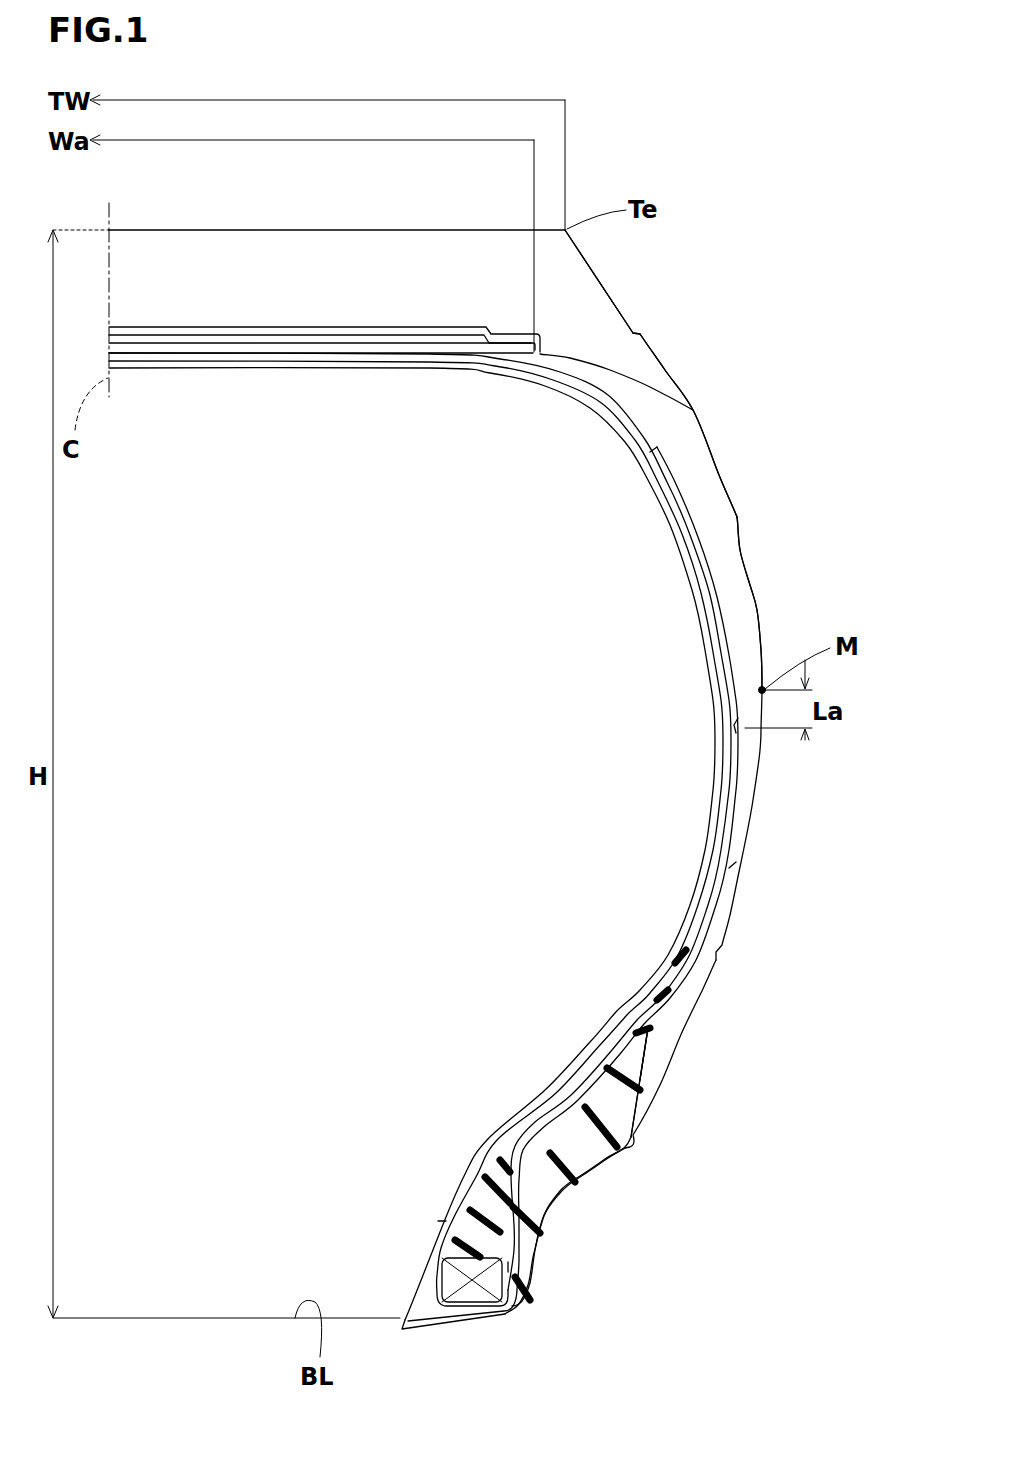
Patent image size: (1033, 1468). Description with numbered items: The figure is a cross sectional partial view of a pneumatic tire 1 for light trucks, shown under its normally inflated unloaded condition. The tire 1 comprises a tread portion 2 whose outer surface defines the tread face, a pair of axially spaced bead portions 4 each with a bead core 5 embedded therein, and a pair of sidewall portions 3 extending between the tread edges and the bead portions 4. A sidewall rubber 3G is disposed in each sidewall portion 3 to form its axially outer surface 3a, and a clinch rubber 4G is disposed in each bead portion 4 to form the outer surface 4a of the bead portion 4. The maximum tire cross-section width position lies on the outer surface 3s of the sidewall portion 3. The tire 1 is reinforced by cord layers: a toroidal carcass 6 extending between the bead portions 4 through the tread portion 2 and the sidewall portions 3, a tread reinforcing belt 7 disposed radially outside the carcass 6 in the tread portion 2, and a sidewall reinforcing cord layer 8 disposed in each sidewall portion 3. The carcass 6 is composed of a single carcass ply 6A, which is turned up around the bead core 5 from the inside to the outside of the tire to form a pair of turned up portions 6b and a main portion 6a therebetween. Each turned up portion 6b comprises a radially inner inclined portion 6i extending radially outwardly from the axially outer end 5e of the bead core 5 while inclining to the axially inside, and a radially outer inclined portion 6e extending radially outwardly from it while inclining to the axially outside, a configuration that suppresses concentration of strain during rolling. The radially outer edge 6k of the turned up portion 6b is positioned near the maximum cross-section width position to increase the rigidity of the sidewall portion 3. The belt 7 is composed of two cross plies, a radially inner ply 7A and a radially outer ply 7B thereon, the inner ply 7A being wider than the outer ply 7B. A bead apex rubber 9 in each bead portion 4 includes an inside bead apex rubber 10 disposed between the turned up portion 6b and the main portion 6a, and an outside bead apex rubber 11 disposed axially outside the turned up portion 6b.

The pneumatic tire 1 is at (710, 154).
The tread portion 2 is at (405, 214).
The sidewall portion 3 is at (800, 493).
The axially outer surface of the sidewall portion 3a is at (723, 468).
The outer surface of the sidewall portion 3s is at (758, 610).
The sidewall rubber 3G is at (718, 905).
The bead portion 4 is at (679, 1242).
The outer surface of the bead portion 4a is at (563, 1200).
The clinch rubber 4G is at (632, 1140).
The bead core 5 is at (455, 1277).
The axially outer end of the bead core 5e is at (512, 1262).
The carcass 6 is at (720, 803).
The carcass ply 6A is at (460, 952).
The main portion 6a is at (573, 1078).
The turned up portion 6b is at (640, 1022).
The radially outer inclined portion 6e is at (655, 1033).
The radially inner inclined portion 6i is at (510, 1243).
The radially outer edge of the turned up portion 6k is at (733, 725).
The tread reinforcing belt 7 is at (428, 350).
The radially inner ply 7A is at (360, 347).
The radially outer ply 7B is at (310, 340).
The sidewall reinforcing cord layer 8 is at (716, 527).
The bead apex rubber 9 is at (355, 1082).
The inside bead apex rubber 10 is at (488, 1207).
The outside bead apex rubber 11 is at (553, 1132).